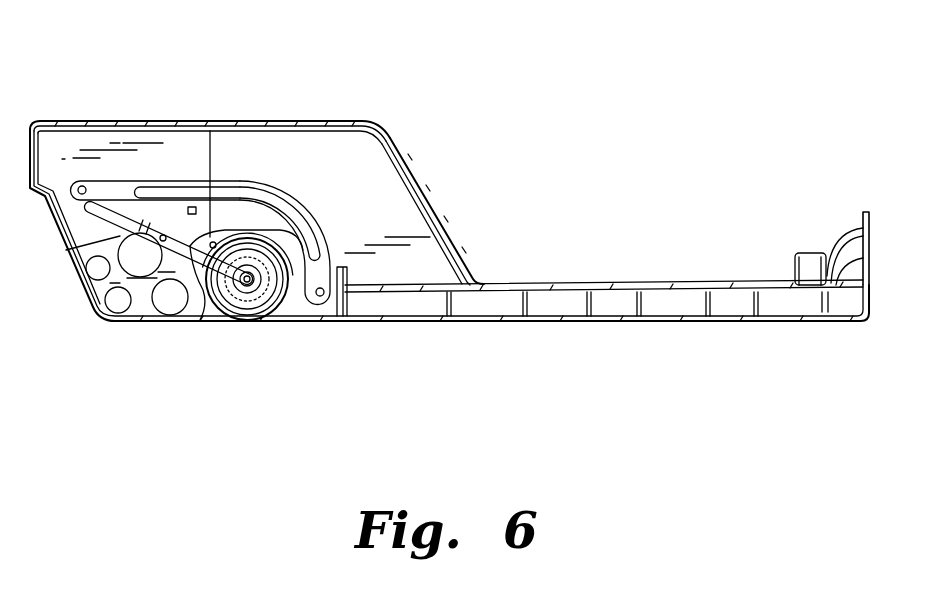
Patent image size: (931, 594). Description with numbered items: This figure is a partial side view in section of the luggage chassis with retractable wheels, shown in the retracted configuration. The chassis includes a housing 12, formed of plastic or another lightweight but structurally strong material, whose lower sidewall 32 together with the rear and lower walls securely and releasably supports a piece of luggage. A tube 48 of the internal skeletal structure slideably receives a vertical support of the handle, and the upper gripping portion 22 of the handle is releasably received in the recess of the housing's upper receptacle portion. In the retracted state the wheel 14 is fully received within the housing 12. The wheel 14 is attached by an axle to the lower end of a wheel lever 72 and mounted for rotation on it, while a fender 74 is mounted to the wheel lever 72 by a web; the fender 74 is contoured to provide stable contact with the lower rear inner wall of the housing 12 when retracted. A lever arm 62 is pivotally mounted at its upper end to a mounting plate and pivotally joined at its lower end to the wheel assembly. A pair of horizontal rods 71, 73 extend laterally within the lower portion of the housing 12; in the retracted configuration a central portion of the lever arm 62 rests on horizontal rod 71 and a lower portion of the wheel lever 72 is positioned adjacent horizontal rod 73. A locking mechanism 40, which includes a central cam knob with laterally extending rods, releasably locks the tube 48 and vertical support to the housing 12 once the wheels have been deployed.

The housing 12 is at (436, 202).
The wheel 14 is at (278, 318).
The upper gripping portion 22 is at (866, 243).
The lower sidewall 32 is at (227, 119).
The locking mechanism 40 is at (807, 254).
The tube 48 is at (795, 303).
The lever arm 62 is at (290, 192).
The horizontal rod 71 is at (212, 218).
The wheel lever 72 is at (200, 256).
The horizontal rod 73 is at (265, 238).
The fender 74 is at (97, 293).